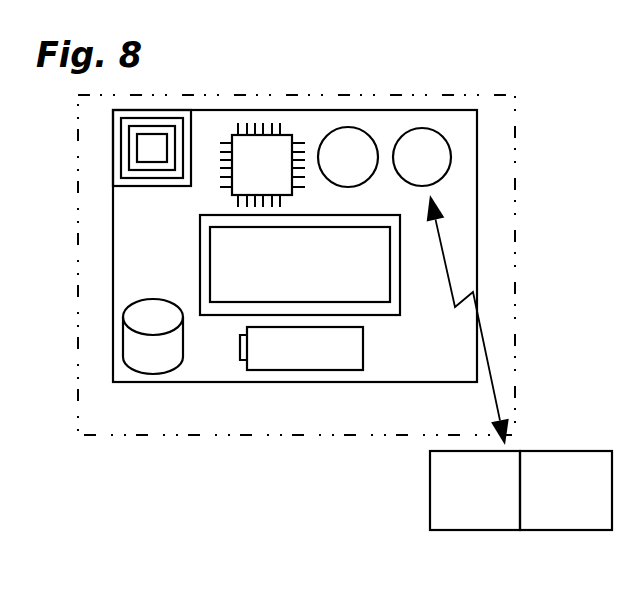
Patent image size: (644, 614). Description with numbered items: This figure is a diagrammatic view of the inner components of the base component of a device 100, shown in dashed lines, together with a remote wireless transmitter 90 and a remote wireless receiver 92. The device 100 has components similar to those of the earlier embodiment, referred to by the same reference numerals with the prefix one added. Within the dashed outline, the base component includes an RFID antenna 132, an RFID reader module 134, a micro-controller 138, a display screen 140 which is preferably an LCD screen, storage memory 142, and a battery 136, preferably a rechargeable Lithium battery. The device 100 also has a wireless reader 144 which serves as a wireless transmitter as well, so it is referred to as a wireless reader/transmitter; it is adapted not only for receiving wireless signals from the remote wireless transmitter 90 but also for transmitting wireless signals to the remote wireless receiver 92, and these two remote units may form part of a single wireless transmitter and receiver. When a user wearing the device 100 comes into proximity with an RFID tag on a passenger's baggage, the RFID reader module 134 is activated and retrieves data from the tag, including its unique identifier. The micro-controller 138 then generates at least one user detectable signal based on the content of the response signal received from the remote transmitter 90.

The device 100 is at (530, 193).
The RFID antenna 132 is at (128, 186).
The RFID reader module 134 is at (352, 127).
The wireless reader/transmitter 144 is at (430, 126).
The micro-controller 138 is at (245, 150).
The display screen 140 is at (332, 282).
The storage memory 142 is at (148, 352).
The battery 136 is at (292, 353).
The remote wireless transmitter 90 is at (485, 518).
The remote wireless receiver 92 is at (580, 518).